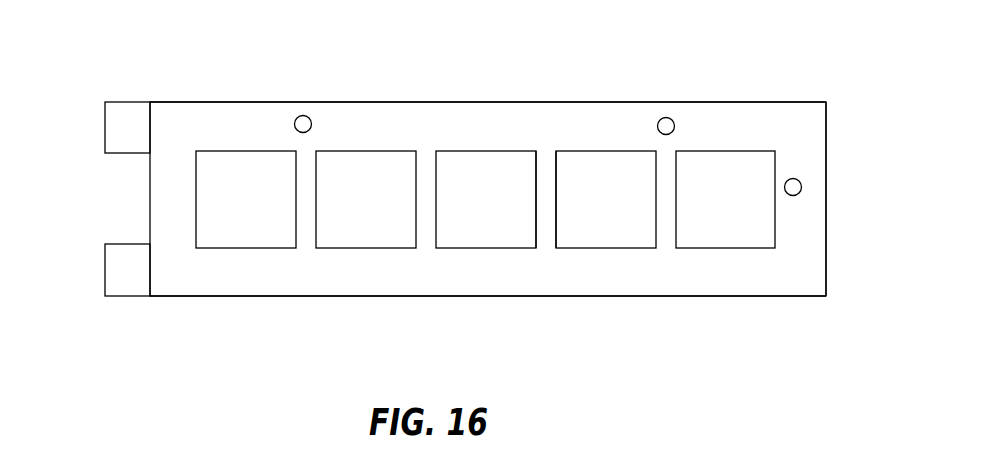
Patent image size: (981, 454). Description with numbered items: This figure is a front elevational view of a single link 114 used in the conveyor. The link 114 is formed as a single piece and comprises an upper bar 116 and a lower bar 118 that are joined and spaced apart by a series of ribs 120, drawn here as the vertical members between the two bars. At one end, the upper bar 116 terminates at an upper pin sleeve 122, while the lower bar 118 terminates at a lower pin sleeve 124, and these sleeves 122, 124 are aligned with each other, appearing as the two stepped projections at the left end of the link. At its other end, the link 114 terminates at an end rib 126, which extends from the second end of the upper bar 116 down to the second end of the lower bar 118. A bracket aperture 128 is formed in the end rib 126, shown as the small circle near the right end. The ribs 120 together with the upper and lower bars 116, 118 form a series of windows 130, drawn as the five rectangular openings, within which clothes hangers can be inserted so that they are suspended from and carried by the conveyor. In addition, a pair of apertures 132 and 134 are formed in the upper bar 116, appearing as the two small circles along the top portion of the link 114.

The link 114 is at (576, 86).
The upper bar 116 is at (210, 117).
The lower bar 118 is at (240, 273).
The ribs 120 is at (545, 222).
The upper pin sleeve 122 is at (125, 133).
The lower pin sleeve 124 is at (125, 272).
The end rib 126 is at (802, 133).
The bracket aperture 128 is at (802, 187).
The windows 130 is at (481, 233).
The aperture 132 is at (312, 125).
The aperture 134 is at (675, 126).